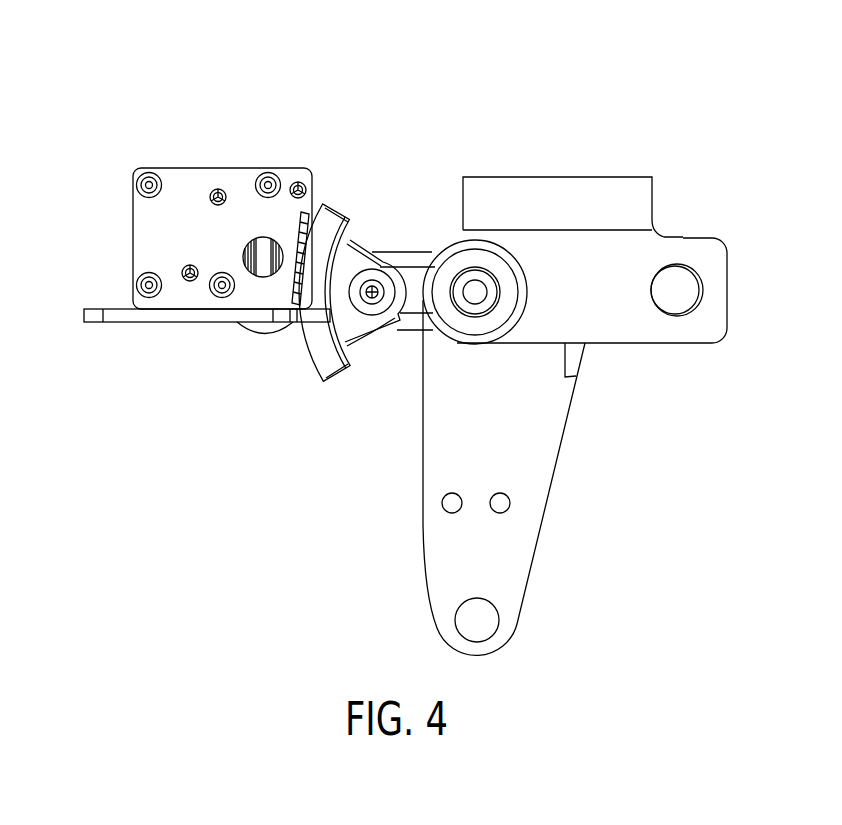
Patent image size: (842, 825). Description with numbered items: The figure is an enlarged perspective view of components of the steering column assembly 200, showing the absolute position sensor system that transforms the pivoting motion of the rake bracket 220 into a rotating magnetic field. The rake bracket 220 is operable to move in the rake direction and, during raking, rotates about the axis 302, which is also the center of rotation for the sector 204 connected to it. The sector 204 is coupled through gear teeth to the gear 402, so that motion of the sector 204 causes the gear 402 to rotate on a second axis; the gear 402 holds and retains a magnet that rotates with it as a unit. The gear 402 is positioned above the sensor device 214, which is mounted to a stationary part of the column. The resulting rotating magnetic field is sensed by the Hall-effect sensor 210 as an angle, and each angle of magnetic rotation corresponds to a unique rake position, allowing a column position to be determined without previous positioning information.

The steering column assembly 200 is at (128, 110).
The sector 204 is at (328, 363).
The Hall-effect sensor 210 is at (263, 260).
The sensor device 214 is at (299, 180).
The rake bracket 220 is at (598, 197).
The axis 302 is at (476, 292).
The gear 402 is at (310, 232).